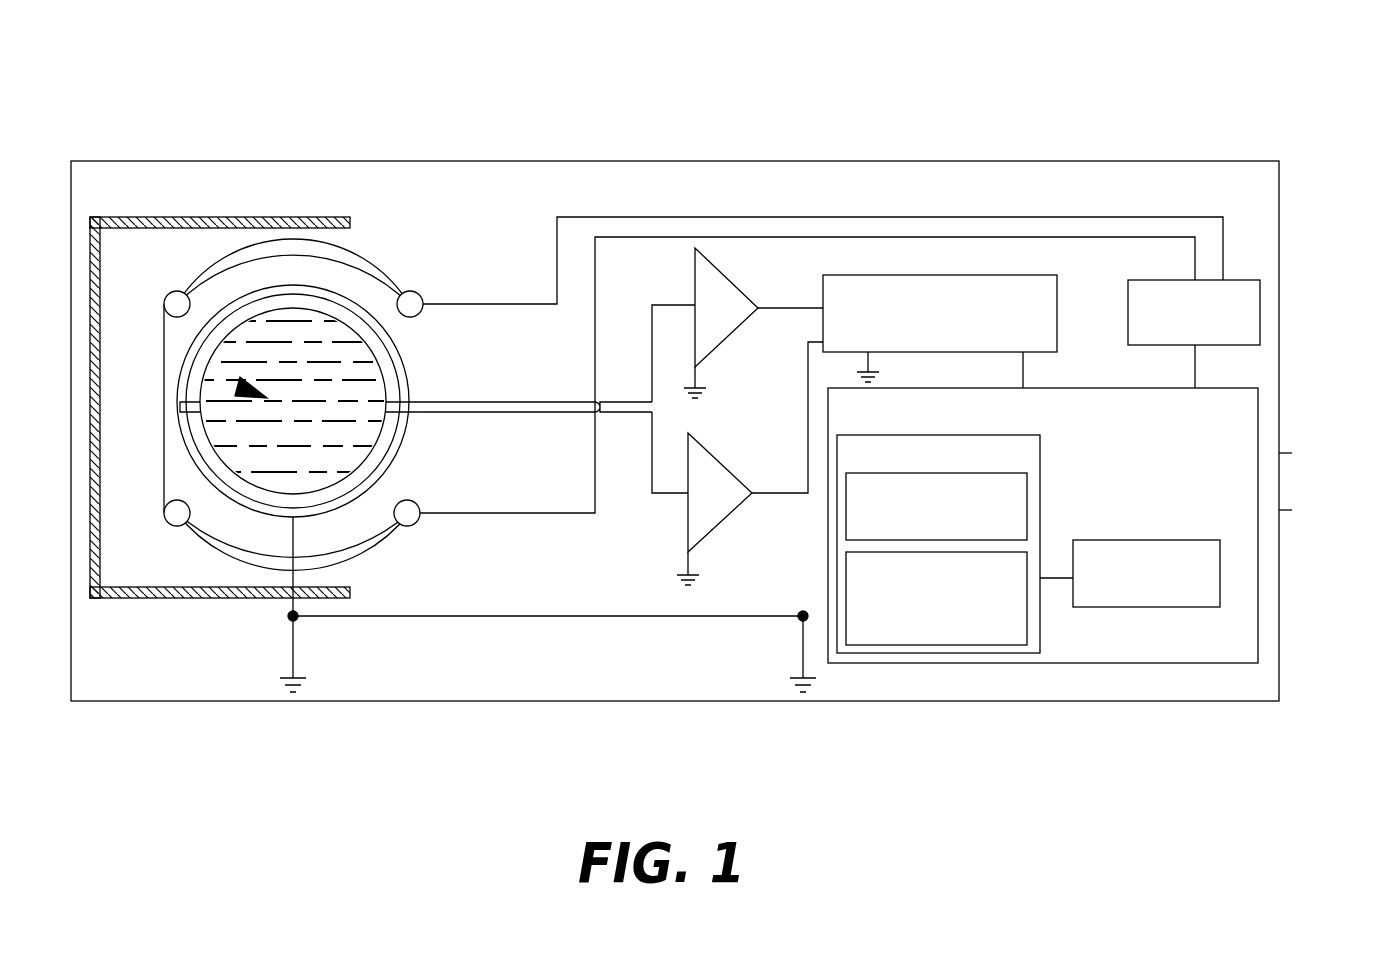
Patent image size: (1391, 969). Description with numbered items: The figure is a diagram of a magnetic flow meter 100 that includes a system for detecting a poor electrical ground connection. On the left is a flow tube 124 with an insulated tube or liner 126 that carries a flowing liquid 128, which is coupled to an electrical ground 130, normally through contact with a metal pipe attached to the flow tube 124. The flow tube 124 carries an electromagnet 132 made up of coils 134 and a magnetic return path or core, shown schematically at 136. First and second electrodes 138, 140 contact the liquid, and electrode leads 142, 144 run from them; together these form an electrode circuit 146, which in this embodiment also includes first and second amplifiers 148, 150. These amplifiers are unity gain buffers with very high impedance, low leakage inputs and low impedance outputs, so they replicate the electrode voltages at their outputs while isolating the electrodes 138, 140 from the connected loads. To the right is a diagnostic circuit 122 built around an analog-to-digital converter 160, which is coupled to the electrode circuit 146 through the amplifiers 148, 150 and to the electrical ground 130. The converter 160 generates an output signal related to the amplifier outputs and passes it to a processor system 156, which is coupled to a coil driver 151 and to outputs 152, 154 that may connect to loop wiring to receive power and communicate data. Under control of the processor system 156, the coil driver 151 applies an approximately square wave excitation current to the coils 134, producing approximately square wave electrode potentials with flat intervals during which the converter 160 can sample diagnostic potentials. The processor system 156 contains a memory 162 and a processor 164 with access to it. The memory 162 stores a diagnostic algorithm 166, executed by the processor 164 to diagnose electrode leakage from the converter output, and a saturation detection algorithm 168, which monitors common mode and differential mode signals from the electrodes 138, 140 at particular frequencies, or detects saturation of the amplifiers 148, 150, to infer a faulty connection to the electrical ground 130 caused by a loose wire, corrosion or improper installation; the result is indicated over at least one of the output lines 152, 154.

The magnetic flow meter 100 is at (218, 74).
The diagnostic circuit 122 is at (922, 180).
The flow tube 124 is at (308, 287).
The liner 126 is at (325, 313).
The flowing liquid 128 is at (238, 382).
The electrical ground 130 is at (296, 619).
The electromagnet 132 is at (215, 647).
The coils 134 is at (197, 275).
The magnetic return path or core 136 is at (178, 598).
The first electrode 138 is at (390, 402).
The second electrode 140 is at (182, 408).
The electrode lead 142 is at (505, 402).
The electrode lead 144 is at (493, 413).
The electrode circuit 146 is at (510, 197).
The first amplifier 148 is at (733, 279).
The second amplifier 150 is at (705, 448).
The coil driver 151 is at (1173, 280).
The output line 152 is at (1292, 453).
The output line 154 is at (1292, 510).
The processor system 156 is at (1063, 388).
The analog-to-digital converter 160 is at (913, 275).
The memory 162 is at (1040, 480).
The processor 164 is at (1145, 540).
The diagnostic algorithm 166 is at (1027, 517).
The saturation detection algorithm 168 is at (1027, 612).